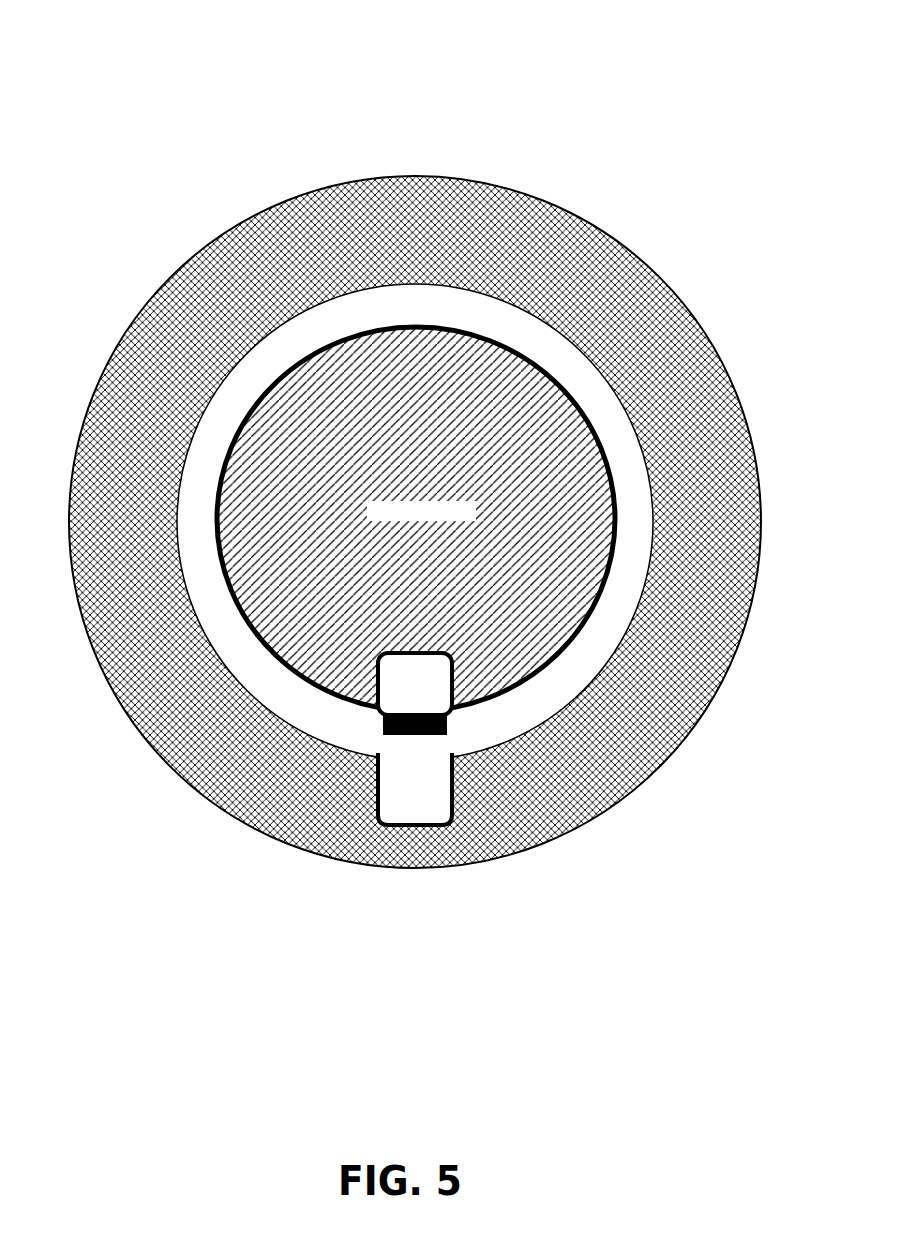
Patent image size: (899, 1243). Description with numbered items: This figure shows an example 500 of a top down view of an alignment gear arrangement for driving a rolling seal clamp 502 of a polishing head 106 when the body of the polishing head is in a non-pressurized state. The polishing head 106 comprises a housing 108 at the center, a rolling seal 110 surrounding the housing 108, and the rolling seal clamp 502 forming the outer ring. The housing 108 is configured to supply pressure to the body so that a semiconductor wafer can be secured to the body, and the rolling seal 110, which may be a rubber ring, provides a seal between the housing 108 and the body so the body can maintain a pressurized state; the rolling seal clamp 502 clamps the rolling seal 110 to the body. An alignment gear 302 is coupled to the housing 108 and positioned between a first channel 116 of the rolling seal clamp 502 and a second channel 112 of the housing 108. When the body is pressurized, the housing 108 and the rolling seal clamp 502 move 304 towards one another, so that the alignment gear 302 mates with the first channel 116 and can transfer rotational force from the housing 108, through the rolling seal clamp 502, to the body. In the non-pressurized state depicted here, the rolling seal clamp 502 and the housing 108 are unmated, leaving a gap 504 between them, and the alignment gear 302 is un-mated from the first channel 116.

The example 500 is at (401, 446).
The rolling seal clamp 502 is at (366, 182).
The polishing head 106 is at (415, 503).
The gap 504 is at (578, 370).
The housing 108 is at (468, 490).
The rolling seal 110 is at (378, 335).
The second channel 112 is at (457, 673).
The alignment gear 302 is at (386, 724).
The first channel 116 is at (453, 780).
The movement 304 is at (418, 311).